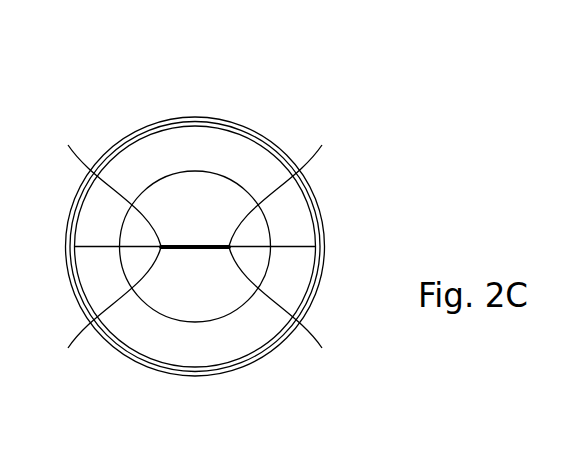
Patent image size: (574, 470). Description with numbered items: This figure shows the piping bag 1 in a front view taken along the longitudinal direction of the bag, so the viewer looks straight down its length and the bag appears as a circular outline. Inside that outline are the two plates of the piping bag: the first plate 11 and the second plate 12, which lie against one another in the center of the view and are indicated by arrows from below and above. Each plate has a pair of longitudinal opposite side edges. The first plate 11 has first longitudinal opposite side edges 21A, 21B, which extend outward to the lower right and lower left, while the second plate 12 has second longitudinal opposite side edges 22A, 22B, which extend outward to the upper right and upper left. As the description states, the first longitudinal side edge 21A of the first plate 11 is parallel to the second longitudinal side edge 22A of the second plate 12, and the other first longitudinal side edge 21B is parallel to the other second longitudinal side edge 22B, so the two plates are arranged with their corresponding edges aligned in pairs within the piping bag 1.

The piping bag 1 is at (135, 102).
The first plate 11 is at (210, 261).
The second plate 12 is at (210, 232).
The first longitudinal side edge 21A is at (285, 312).
The first longitudinal side edge 21B is at (104, 312).
The second longitudinal side edge 22A is at (286, 181).
The second longitudinal side edge 22B is at (104, 181).